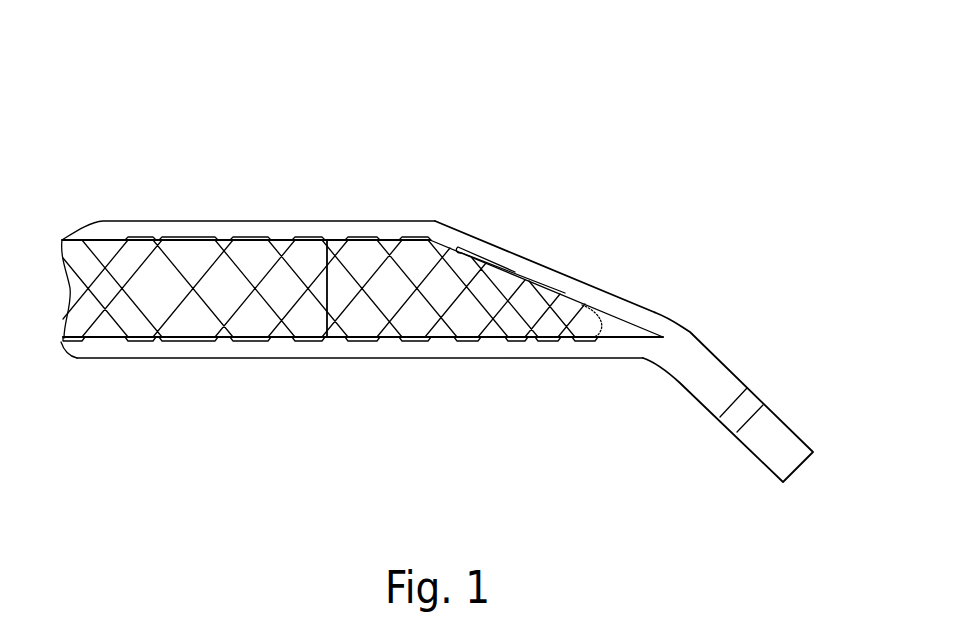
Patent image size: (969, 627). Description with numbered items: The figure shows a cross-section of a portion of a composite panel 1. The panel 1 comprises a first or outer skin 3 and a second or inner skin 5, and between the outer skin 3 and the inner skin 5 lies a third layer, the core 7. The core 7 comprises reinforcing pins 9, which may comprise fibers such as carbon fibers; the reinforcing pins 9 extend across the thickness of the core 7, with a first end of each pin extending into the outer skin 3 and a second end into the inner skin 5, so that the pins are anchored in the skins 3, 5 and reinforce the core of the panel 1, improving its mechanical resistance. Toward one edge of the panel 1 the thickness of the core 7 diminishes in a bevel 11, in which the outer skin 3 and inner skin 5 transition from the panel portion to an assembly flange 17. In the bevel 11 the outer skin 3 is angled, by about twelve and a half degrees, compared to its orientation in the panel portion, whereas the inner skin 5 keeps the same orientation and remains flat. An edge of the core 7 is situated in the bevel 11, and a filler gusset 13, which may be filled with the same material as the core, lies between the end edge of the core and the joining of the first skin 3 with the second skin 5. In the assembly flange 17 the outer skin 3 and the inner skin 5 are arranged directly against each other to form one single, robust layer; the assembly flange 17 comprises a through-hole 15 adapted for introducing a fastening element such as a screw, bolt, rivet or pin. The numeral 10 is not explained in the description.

The composite panel 1 is at (358, 203).
The first skin 3 is at (483, 250).
The second skin 5 is at (317, 348).
The core 7 is at (228, 282).
The reinforcing pins 9 is at (168, 313).
The filler material 10 is at (392, 278).
The bevel 11 is at (565, 228).
The filler gusset 13 is at (615, 328).
The through-hole 15 is at (727, 426).
The assembly flange 17 is at (805, 407).